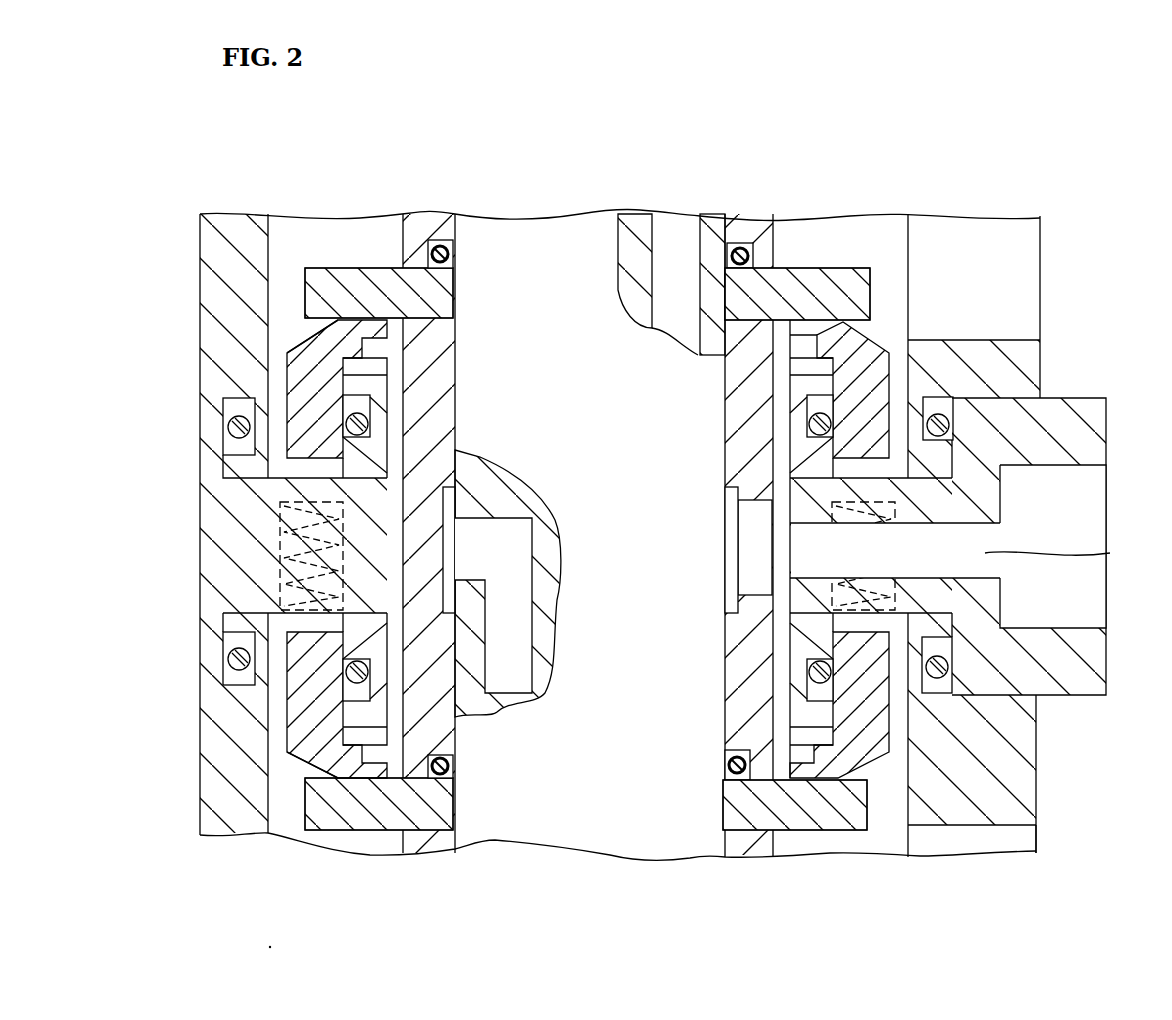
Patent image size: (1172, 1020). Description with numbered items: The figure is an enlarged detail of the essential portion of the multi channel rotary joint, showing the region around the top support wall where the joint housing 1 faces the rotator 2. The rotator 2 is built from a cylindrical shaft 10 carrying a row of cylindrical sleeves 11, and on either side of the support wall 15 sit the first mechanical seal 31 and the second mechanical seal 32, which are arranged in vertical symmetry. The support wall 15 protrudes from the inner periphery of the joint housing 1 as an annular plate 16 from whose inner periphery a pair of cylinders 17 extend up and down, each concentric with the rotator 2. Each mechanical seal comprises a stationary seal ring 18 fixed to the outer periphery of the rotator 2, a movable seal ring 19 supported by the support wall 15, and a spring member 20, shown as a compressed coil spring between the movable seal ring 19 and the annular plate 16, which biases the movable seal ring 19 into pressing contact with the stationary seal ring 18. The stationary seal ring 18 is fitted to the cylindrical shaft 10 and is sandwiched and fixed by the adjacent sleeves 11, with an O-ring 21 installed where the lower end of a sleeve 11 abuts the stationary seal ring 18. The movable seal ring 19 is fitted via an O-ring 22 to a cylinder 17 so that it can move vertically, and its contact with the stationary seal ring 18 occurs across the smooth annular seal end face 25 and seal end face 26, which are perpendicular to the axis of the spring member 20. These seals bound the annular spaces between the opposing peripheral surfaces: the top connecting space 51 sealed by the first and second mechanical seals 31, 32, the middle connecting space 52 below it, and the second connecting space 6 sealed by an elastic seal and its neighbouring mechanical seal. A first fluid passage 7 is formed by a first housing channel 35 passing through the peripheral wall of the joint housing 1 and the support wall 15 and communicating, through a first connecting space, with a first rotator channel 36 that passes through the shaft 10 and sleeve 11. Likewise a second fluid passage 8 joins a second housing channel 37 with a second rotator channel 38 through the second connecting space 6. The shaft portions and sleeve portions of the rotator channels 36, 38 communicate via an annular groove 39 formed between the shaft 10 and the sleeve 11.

The joint housing 1 is at (1050, 784).
The rotator 2 is at (581, 200).
The first mechanical seal 31 is at (276, 382).
The second mechanical seal 32 is at (276, 707).
The top connecting space 51 is at (791, 832).
The middle connecting space 52 is at (884, 832).
The second connecting space 6 is at (868, 244).
The first fluid passage 7 is at (519, 643).
The second fluid passage 8 is at (668, 289).
The cylindrical shaft 10 is at (528, 240).
The cylindrical sleeve 11 is at (422, 226).
The support wall 15 is at (232, 620).
The annular plate 16 is at (734, 633).
The cylinder 17 is at (786, 400).
The stationary seal ring 18 is at (800, 266).
The movable seal ring 19 is at (968, 372).
The spring member 20 is at (300, 563).
The O-ring 21 is at (442, 248).
The O-ring 22 is at (808, 430).
The seal end face 25 is at (318, 328).
The seal end face 26 is at (340, 294).
The first housing channel 35 is at (988, 553).
The first rotator channel 36 is at (505, 557).
The second housing channel 37 is at (1003, 268).
The second rotator channel 38 is at (679, 238).
The annular groove 39 is at (450, 547).